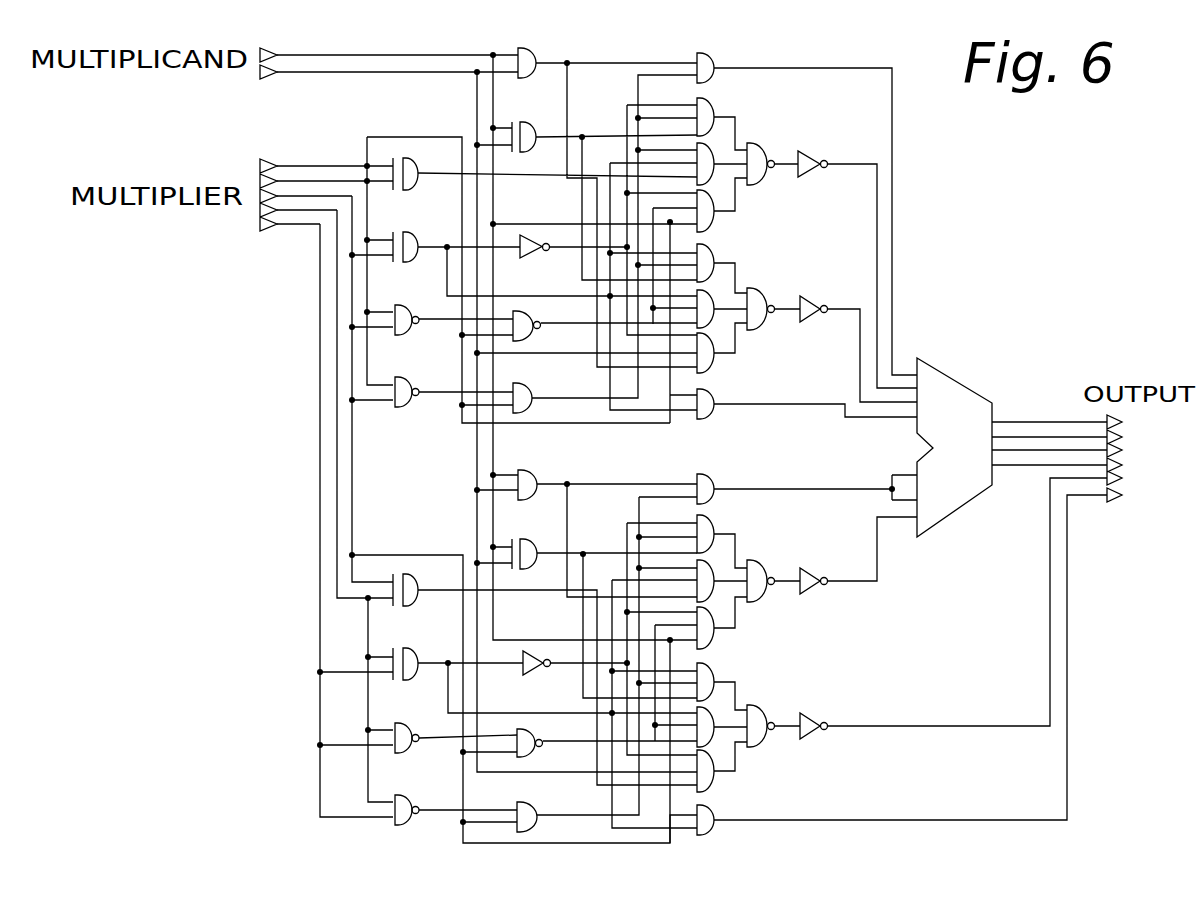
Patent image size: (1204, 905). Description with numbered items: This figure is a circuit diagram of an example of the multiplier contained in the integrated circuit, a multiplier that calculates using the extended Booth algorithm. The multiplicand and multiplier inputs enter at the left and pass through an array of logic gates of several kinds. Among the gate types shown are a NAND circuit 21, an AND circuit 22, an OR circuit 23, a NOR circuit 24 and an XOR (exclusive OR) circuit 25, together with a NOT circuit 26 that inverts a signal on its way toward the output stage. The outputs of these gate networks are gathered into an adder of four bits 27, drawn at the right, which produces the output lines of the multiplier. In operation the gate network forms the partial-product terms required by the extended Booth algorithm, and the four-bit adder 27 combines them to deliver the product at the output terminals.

The NAND circuit 21 is at (401, 408).
The AND circuit 22 is at (712, 56).
The OR circuit 23 is at (530, 50).
The NOR circuit 24 is at (750, 143).
The XOR circuit 25 is at (518, 122).
The NOT circuit 26 is at (805, 145).
The adder of four bits 27 is at (965, 526).